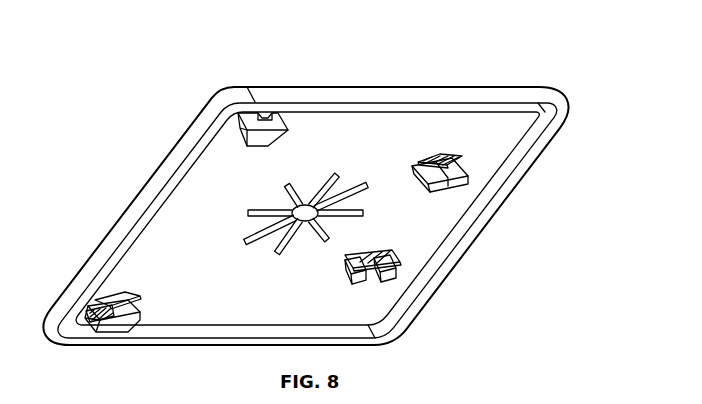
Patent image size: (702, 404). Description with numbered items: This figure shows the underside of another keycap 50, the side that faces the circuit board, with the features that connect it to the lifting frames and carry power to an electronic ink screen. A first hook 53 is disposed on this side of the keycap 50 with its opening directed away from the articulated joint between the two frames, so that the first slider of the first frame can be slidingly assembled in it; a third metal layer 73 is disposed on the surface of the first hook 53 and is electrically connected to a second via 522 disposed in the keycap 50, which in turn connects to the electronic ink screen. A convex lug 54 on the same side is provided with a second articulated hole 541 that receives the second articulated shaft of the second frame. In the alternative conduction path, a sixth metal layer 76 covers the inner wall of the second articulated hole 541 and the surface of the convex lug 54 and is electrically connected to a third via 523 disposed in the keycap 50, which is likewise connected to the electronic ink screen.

The keycap 50 is at (146, 139).
The first hook 53 is at (270, 140).
The third via 523 is at (447, 158).
The sixth metal layer 76 is at (462, 167).
The convex lug 54 is at (341, 259).
The second articulated hole 541 is at (392, 258).
The second via 522 is at (108, 304).
The third metal layer 73 is at (138, 303).